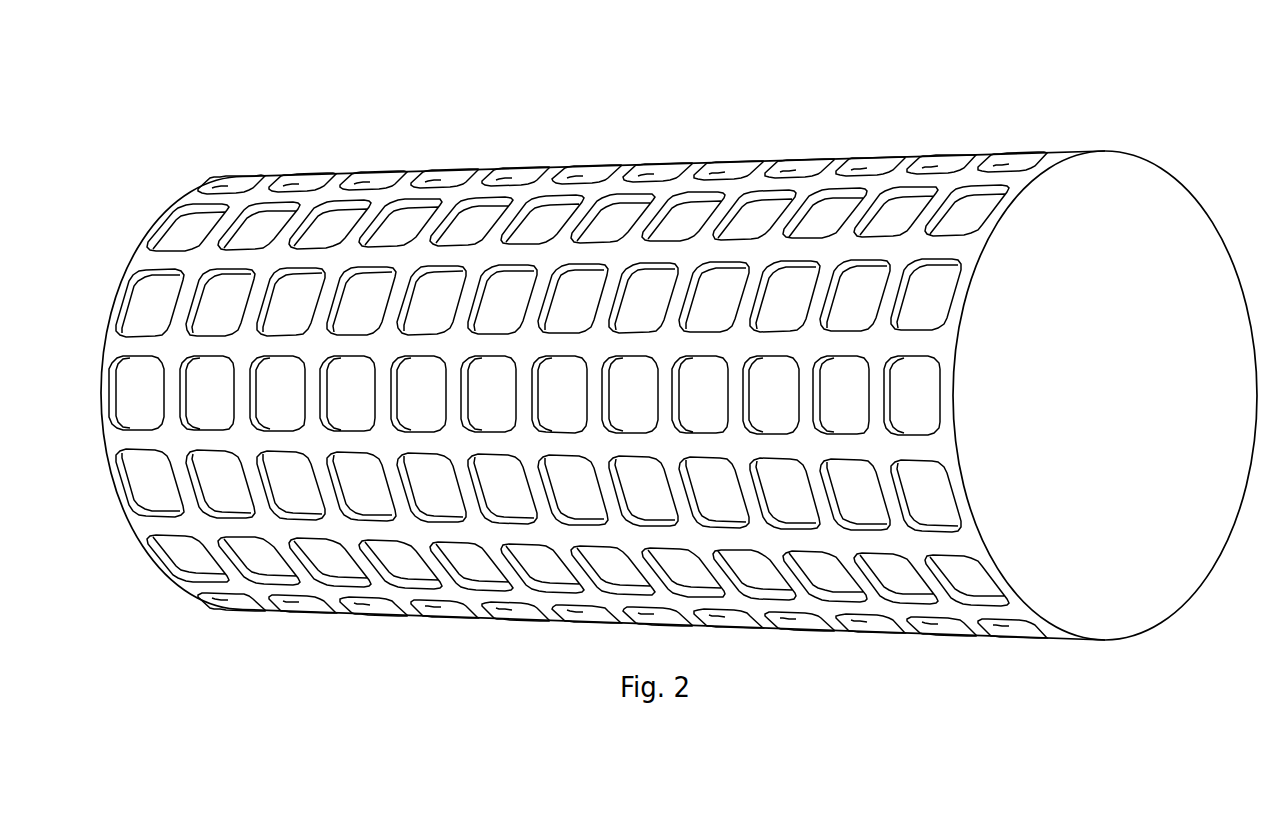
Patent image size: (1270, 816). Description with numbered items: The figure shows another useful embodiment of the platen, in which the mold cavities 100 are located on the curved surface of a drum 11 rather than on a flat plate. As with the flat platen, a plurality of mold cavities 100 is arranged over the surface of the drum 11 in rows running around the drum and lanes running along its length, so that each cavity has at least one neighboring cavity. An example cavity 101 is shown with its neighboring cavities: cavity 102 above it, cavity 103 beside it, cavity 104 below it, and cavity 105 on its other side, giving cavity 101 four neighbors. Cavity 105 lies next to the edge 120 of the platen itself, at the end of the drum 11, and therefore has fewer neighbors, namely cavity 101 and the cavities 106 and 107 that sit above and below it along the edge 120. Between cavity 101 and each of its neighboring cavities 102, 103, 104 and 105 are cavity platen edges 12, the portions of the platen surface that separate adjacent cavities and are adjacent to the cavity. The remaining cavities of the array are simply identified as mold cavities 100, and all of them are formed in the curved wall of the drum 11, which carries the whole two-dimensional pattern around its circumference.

The drum 11 is at (670, 108).
The cavity platen edges 12 is at (203, 352).
The mold cavities 100 is at (978, 226).
The cavity 101 is at (226, 407).
The neighboring cavity 102 is at (234, 333).
The neighboring cavity 103 is at (296, 407).
The neighboring cavity 104 is at (245, 506).
The neighboring cavity 105 is at (153, 407).
The neighboring cavity 106 is at (170, 506).
The neighboring cavity 107 is at (164, 333).
The edge of the platen 120 is at (133, 531).